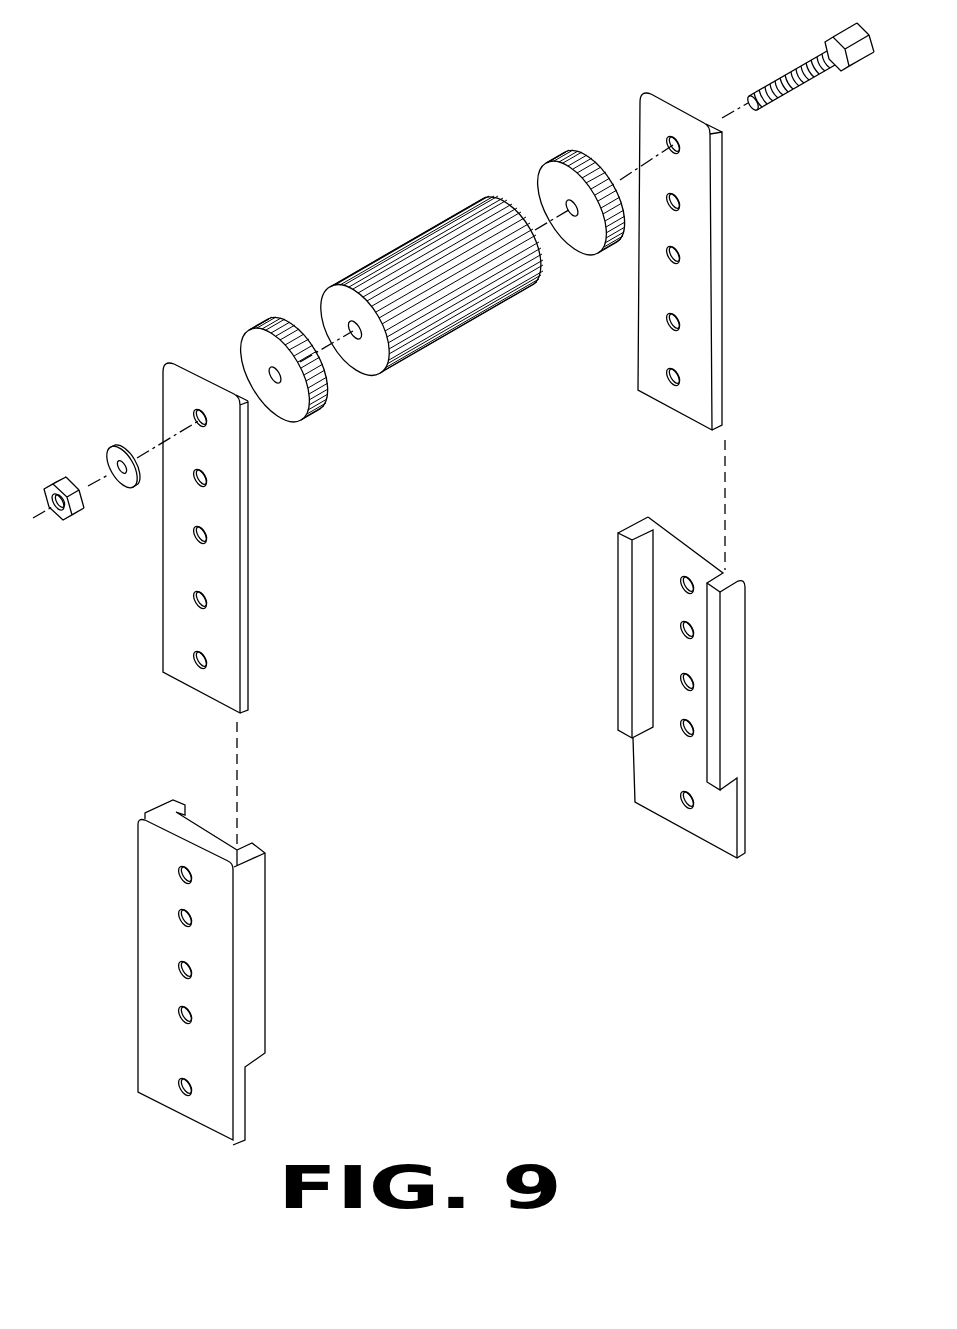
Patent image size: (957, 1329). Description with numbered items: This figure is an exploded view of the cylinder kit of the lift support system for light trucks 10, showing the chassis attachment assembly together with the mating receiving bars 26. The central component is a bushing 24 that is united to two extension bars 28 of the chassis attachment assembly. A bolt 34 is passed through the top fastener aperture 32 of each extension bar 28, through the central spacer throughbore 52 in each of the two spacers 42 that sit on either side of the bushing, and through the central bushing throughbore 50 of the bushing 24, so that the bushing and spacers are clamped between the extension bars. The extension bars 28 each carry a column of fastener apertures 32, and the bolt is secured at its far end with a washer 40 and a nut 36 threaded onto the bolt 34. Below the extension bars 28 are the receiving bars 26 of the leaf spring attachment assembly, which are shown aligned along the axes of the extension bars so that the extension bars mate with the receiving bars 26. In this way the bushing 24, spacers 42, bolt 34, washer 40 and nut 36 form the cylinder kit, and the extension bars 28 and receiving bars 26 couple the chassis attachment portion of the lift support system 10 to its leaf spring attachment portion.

The Lift Support System for Light Trucks 10 is at (176, 188).
The bushing 24 is at (378, 258).
The receiving bar 26 is at (268, 922).
The extension bar 28 is at (250, 572).
The fastener apertures 32 is at (190, 532).
The bolt 34 is at (782, 73).
The nut 36 is at (63, 478).
The washer 40 is at (117, 445).
The spacer 42 is at (262, 335).
The central throughbore of bushing 50 is at (368, 368).
The central throughbore of spacer 52 is at (293, 418).